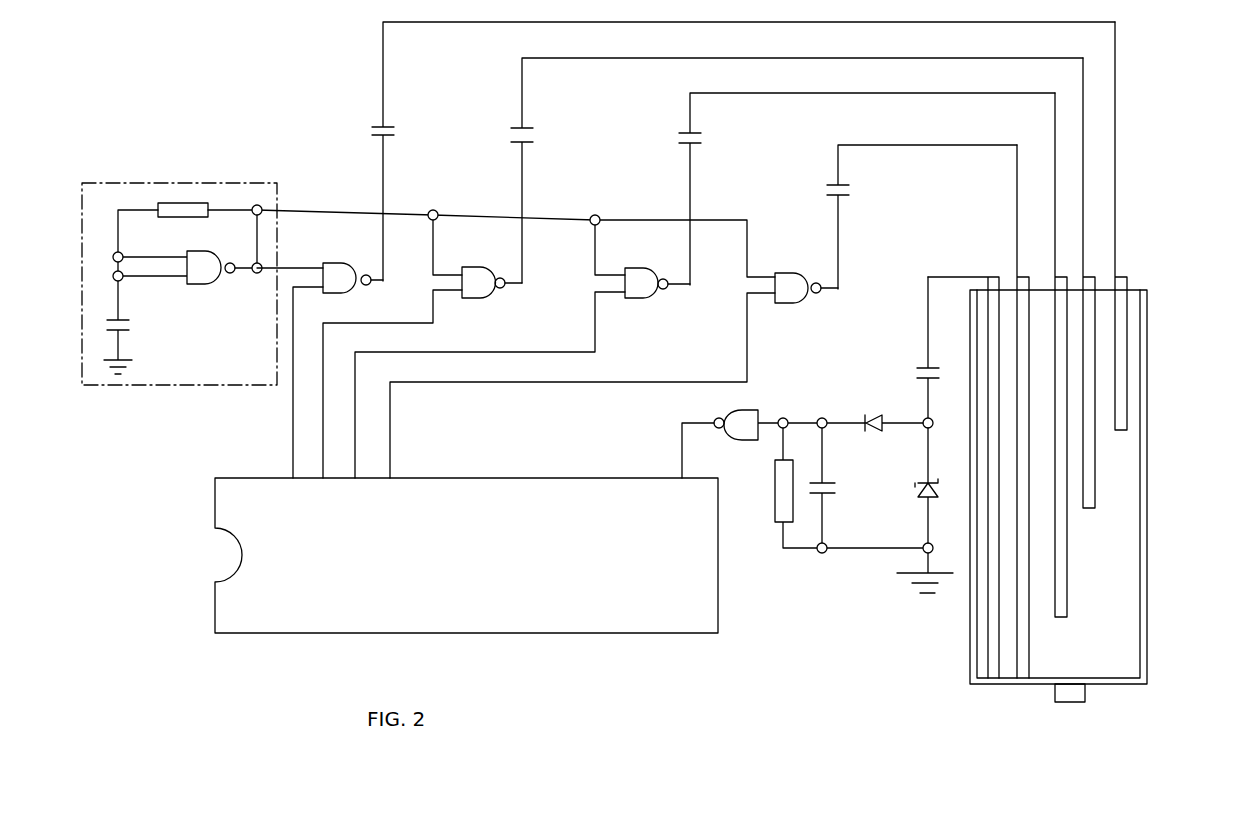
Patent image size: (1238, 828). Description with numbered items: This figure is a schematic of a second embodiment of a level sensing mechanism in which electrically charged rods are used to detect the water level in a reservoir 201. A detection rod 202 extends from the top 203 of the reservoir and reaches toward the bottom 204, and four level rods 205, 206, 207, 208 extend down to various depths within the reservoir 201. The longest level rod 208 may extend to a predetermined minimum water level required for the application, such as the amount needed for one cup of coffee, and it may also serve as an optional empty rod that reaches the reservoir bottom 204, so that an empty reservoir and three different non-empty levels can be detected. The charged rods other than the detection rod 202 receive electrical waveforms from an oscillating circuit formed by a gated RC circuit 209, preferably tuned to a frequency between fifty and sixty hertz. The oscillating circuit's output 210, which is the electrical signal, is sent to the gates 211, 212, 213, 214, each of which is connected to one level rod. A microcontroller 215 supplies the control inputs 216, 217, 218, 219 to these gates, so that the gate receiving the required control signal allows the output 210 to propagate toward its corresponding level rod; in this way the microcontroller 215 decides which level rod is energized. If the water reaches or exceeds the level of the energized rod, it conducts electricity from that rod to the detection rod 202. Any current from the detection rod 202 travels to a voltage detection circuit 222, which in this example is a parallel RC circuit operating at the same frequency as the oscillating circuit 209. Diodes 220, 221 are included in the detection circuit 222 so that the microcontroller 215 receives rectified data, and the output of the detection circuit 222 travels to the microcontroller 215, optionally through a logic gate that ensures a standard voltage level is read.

The reservoir 201 is at (1041, 362).
The detection rod 202 is at (985, 655).
The top 203 is at (1142, 290).
The bottom 204 is at (1120, 688).
The level rod 205 is at (1127, 420).
The level rod 206 is at (1095, 500).
The level rod 207 is at (1062, 570).
The level rod 208 is at (1029, 635).
The gated RC circuit 209 is at (152, 180).
The oscillating circuit's output 210 is at (262, 245).
The gate 211 is at (341, 262).
The gate 212 is at (482, 267).
The gate 213 is at (649, 225).
The gate 214 is at (784, 275).
The microcontroller 215 is at (215, 610).
The control input 216 is at (293, 398).
The control input 217 is at (323, 446).
The control input 218 is at (355, 408).
The control input 219 is at (390, 444).
The diode 220 is at (878, 417).
The diode 221 is at (918, 498).
The voltage detection circuit 222 is at (817, 469).